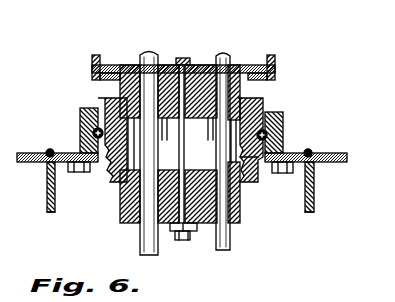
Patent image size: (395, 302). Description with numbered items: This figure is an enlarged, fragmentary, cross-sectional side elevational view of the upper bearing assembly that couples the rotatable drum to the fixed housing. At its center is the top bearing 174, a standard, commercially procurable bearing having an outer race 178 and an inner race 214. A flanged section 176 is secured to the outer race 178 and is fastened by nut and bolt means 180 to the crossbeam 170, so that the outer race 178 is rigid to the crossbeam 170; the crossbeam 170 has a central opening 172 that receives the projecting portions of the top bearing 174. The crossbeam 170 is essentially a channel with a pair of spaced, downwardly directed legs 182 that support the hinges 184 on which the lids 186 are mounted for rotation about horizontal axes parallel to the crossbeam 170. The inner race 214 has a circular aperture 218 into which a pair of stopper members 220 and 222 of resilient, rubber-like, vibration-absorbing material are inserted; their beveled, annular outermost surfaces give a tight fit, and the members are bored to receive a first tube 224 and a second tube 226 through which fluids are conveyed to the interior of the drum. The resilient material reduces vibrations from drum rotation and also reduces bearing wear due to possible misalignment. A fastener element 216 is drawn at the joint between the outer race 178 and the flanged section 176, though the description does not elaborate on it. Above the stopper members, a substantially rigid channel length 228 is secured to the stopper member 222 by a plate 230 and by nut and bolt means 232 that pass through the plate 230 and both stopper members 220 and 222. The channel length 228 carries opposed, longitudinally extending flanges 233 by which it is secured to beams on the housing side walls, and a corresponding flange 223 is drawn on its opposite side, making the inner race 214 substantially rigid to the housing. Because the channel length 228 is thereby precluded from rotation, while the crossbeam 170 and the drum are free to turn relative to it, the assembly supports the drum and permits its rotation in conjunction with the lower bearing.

The crossbeam 170 is at (288, 173).
The central opening 172 is at (250, 170).
The top bearing 174 is at (76, 102).
The flanged section 176 is at (79, 148).
The outer race 178 is at (283, 113).
The nut and bolt means 180 is at (80, 173).
The legs 182 is at (53, 212).
The hinges 184 is at (47, 151).
The lids 186 is at (20, 164).
The inner race 214 is at (262, 100).
The bolt 216 is at (270, 131).
The circular aperture 218 is at (124, 180).
The stopper member 220 is at (238, 223).
The stopper member 222 is at (122, 63).
The right flange 223 is at (272, 61).
The first tube 224 is at (150, 255).
The second tube 226 is at (222, 250).
The channel length 228 is at (250, 65).
The plate 230 is at (186, 61).
The nut and bolt means 232 is at (185, 240).
The flanges 233 is at (96, 57).